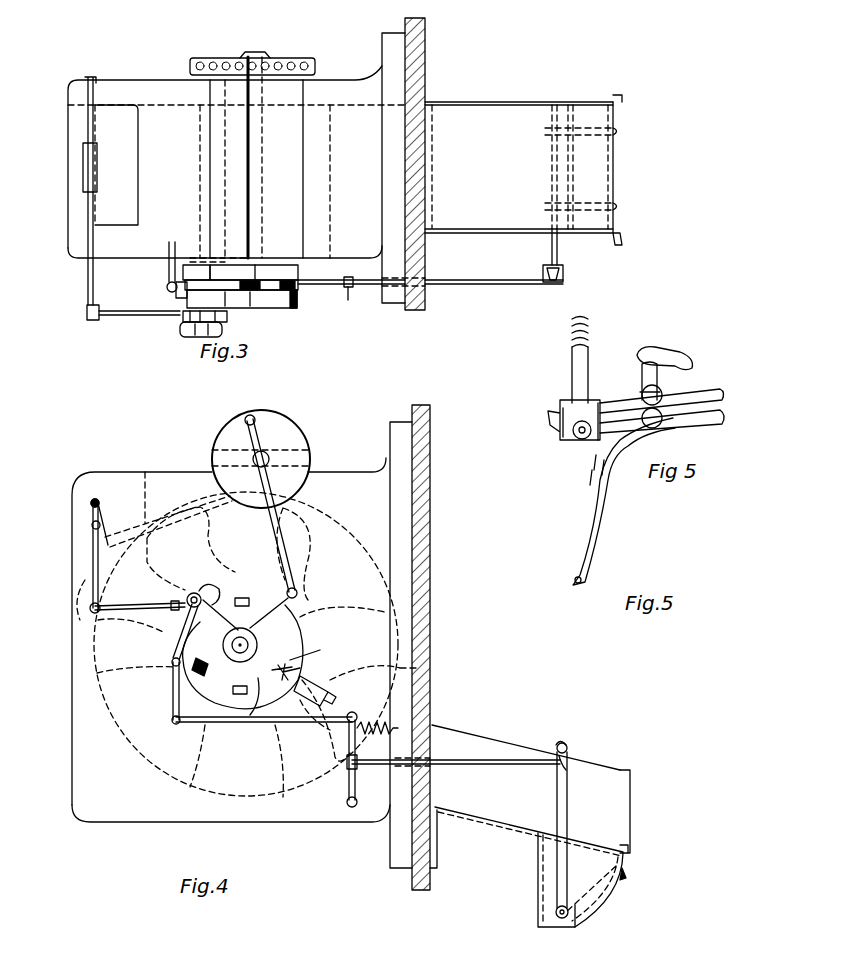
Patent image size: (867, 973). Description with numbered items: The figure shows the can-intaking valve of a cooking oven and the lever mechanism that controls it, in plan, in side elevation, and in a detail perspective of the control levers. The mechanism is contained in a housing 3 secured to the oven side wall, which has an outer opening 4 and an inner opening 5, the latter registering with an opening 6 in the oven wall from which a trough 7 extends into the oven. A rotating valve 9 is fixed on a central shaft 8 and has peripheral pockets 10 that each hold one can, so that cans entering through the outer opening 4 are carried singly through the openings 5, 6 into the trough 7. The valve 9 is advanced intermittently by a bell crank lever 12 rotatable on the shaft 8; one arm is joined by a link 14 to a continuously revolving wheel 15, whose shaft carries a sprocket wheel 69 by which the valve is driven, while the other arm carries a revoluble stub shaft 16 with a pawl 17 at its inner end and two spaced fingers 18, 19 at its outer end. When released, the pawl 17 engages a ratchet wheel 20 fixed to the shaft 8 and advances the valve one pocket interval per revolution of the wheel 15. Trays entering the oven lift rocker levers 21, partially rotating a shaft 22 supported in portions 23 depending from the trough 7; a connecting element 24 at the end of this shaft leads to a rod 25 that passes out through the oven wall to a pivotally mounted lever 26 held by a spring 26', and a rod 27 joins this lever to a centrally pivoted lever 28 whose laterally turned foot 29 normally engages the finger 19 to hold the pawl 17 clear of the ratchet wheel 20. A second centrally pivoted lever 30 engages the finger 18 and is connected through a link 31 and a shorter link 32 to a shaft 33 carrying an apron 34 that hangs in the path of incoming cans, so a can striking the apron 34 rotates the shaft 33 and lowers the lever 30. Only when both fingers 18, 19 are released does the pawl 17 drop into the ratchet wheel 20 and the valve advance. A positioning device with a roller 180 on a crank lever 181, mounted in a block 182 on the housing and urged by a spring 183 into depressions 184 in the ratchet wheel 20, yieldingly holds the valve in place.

In FIG. 3, the housing 3 is at (120, 80).
In FIG. 4, the housing 3 is at (125, 478).
In FIG. 3, the outer opening 4 is at (105, 132).
In FIG. 4, the outer opening 4 is at (85, 585).
In FIG. 4, the inner opening 5 is at (432, 655).
In FIG. 4, the opening in oven wall 6 is at (433, 690).
In FIG. 3, the trough 7 is at (495, 115).
In FIG. 4, the trough 7 is at (490, 752).
In FIG. 3, the central shaft 8 is at (262, 128).
In FIG. 4, the rotating valve 9 is at (322, 530).
In FIG. 4, the peripheral pockets 10 is at (315, 595).
In FIG. 3, the bell crank lever 12 is at (298, 298).
In FIG. 4, the bell crank lever 12 is at (290, 625).
In FIG. 3, the link 14 is at (280, 300).
In FIG. 4, the link 14 is at (275, 490).
In FIG. 3, the continuously revolving wheel 15 is at (298, 272).
In FIG. 4, the continuously revolving wheel 15 is at (298, 445).
In FIG. 3, the revoluble stub shaft 16 is at (178, 300).
In FIG. 4, the revoluble stub shaft 16 is at (187, 597).
In FIG. 5, the revoluble stub shaft 16 is at (660, 378).
In FIG. 3, the pawl 17 is at (166, 292).
In FIG. 4, the pawl 17 is at (206, 587).
In FIG. 5, the pawl 17 is at (678, 352).
In FIG. 3, the finger 18 is at (227, 317).
In FIG. 5, the finger 18 is at (718, 414).
In FIG. 3, the finger 19 is at (195, 338).
In FIG. 4, the finger 19 is at (185, 615).
In FIG. 5, the finger 19 is at (684, 428).
In FIG. 3, the ratchet wheel 20 is at (205, 262).
In FIG. 4, the ratchet wheel 20 is at (250, 717).
In FIG. 3, the rocker levers 21 is at (585, 128).
In FIG. 4, the rocker levers 21 is at (624, 878).
In FIG. 3, the shaft 22 is at (558, 250).
In FIG. 4, the shaft 22 is at (555, 913).
In FIG. 4, the depending portions 23 is at (545, 865).
In FIG. 3, the link 24 is at (565, 282).
In FIG. 4, the link 24 is at (568, 808).
In FIG. 3, the rod 25 is at (483, 280).
In FIG. 4, the rod 25 is at (468, 765).
In FIG. 3, the pivotally mounted lever 26 is at (361, 299).
In FIG. 4, the pivotally mounted lever 26 is at (328, 762).
In FIG. 4, the spring 26' is at (376, 710).
In FIG. 3, the rod 27 is at (326, 280).
In FIG. 4, the rod 27 is at (205, 725).
In FIG. 4, the centrally pivoted lever 28 is at (173, 695).
In FIG. 5, the centrally pivoted lever 28 is at (606, 535).
In FIG. 4, the laterally turned foot 29 is at (225, 598).
In FIG. 5, the laterally turned foot 29 is at (724, 417).
In FIG. 3, the centrally pivoted lever 30 is at (135, 316).
In FIG. 4, the centrally pivoted lever 30 is at (150, 608).
In FIG. 5, the centrally pivoted lever 30 is at (724, 394).
In FIG. 4, the link 31 is at (92, 540).
In FIG. 4, the shorter link 32 is at (92, 515).
In FIG. 3, the shaft 33 is at (88, 210).
In FIG. 4, the shaft 33 is at (95, 500).
In FIG. 3, the apron 34 is at (83, 168).
In FIG. 4, the apron 34 is at (168, 509).
In FIG. 3, the sprocket wheel 69 is at (312, 66).
In FIG. 4, the roller 180 is at (314, 647).
In FIG. 4, the crank lever 181 is at (300, 672).
In FIG. 4, the block 182 is at (375, 667).
In FIG. 4, the spring 183 is at (318, 704).
In FIG. 4, the depressions 184 is at (221, 676).